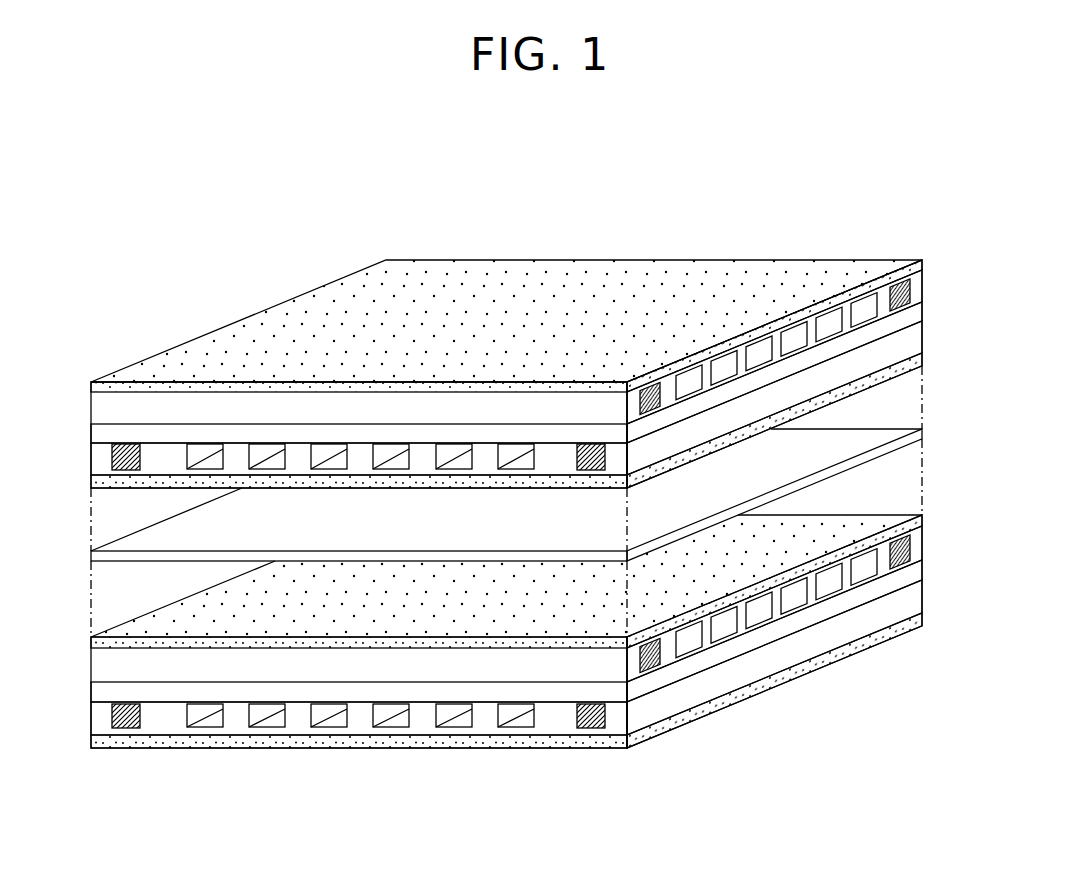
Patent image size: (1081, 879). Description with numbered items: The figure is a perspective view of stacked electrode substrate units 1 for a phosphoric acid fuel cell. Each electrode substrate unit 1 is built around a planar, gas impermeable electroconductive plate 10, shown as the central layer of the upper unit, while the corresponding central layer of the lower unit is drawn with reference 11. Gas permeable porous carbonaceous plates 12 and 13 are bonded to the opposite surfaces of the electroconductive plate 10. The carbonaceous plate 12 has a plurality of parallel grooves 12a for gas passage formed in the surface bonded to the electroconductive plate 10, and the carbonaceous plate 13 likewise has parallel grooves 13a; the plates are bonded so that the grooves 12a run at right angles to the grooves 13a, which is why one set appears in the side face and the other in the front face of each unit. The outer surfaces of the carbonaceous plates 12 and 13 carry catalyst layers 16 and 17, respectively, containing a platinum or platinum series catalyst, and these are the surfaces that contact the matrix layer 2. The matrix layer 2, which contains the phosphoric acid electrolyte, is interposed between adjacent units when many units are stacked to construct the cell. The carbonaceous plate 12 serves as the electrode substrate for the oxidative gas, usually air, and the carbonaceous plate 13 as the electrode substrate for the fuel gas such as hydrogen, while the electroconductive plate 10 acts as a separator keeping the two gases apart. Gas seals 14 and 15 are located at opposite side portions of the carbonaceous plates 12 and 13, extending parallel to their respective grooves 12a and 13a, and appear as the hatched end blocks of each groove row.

The electrode substrate unit 1 is at (1022, 253).
The matrix layer 2 is at (895, 445).
The electroconductive plate 10 is at (902, 315).
The lower substrate 11 is at (908, 575).
The carbonaceous plate 12 is at (922, 288).
The grooves 12a is at (766, 350).
The carbonaceous plate 13 is at (900, 343).
The grooves 13a is at (333, 465).
The gas seal 14 is at (668, 392).
The gas seal 15 is at (143, 463).
The catalyst layer 16 is at (878, 282).
The catalyst layer 17 is at (900, 373).